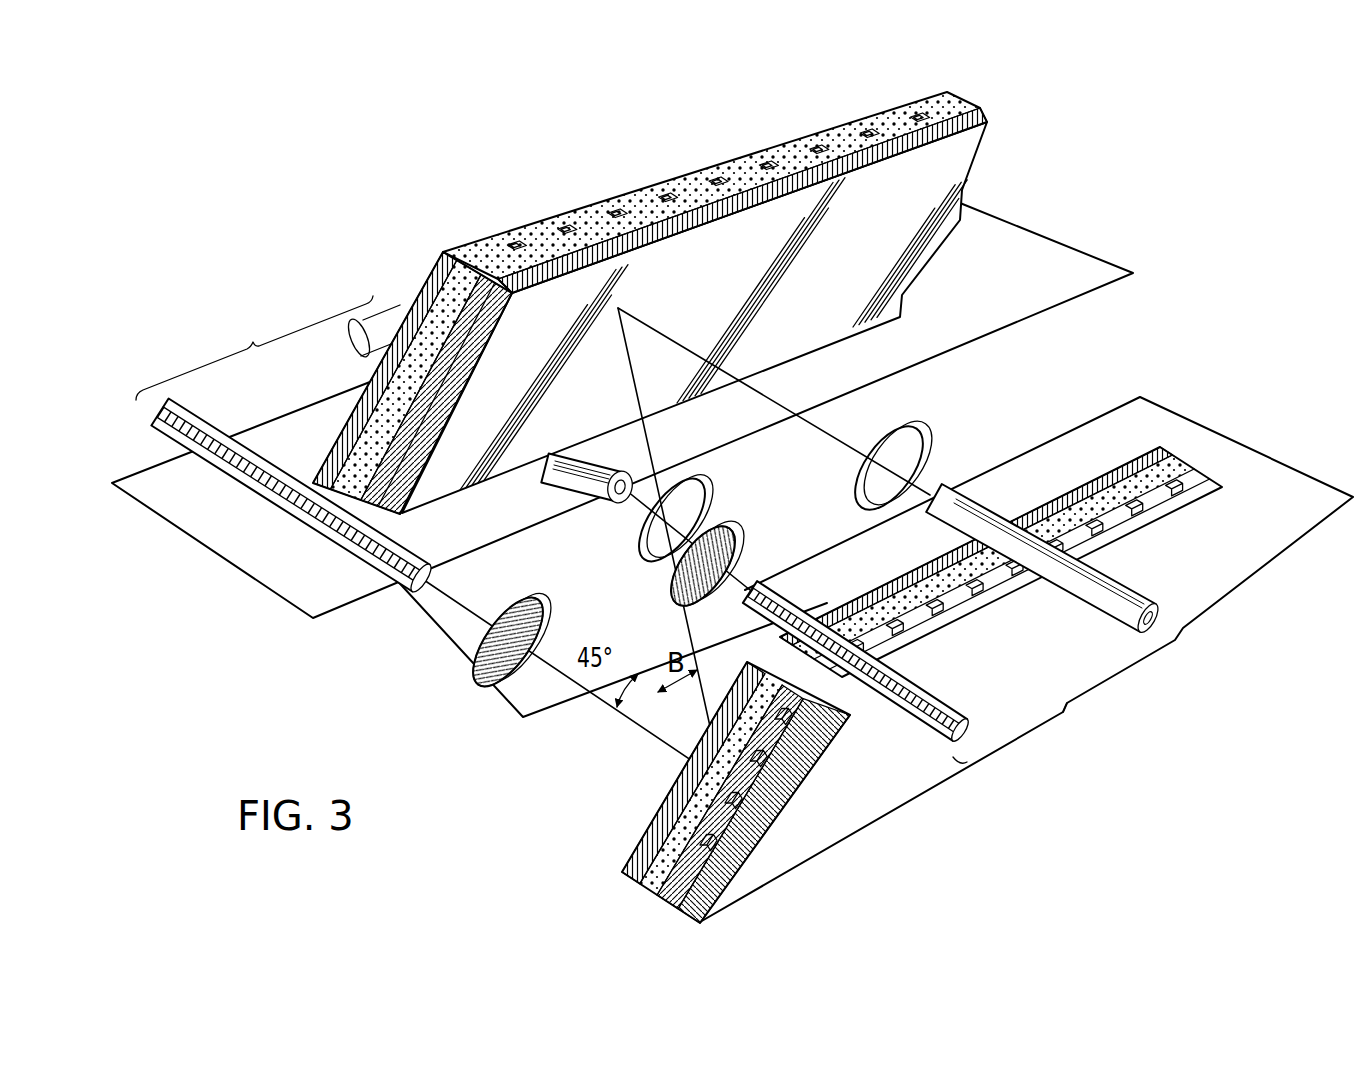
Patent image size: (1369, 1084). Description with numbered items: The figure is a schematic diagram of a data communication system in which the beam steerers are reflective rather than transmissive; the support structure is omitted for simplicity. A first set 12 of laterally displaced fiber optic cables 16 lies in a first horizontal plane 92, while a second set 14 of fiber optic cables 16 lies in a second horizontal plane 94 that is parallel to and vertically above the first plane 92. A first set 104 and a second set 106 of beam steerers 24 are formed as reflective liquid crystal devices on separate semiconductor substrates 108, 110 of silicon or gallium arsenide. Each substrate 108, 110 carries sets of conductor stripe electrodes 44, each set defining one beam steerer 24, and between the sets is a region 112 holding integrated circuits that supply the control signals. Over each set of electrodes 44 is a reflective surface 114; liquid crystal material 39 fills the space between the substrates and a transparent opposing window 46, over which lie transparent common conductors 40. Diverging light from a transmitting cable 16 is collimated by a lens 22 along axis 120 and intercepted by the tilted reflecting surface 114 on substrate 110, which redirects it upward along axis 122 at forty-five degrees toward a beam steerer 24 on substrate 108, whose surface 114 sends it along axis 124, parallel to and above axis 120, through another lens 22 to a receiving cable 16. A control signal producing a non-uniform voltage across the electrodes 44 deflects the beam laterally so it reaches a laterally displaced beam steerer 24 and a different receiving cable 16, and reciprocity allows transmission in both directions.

The first set of fiber optic cables 12 is at (254, 348).
The second set of fiber optic cables 14 is at (1064, 706).
The fiber optic cable 16 is at (170, 399).
The collimating lens 22 is at (930, 410).
The beam steerer 24 is at (831, 200).
The liquid crystal material 39 is at (411, 459).
The transparent common conductor 40 is at (871, 329).
The conductor stripe electrodes 44 is at (812, 128).
The transparent opposing window 46 is at (384, 518).
The first horizontal plane 92 is at (230, 548).
The second horizontal plane 94 is at (1270, 533).
The first set of beam steerers 104 is at (727, 153).
The second set of beam steerers 106 is at (976, 743).
The semiconductor substrate 108 is at (484, 580).
The semiconductor substrate 110 is at (693, 909).
The region 112 is at (1170, 580).
The reflective surface 114 is at (341, 454).
The axis 120 is at (593, 693).
The axis 122 is at (533, 534).
The axis 124 is at (618, 497).